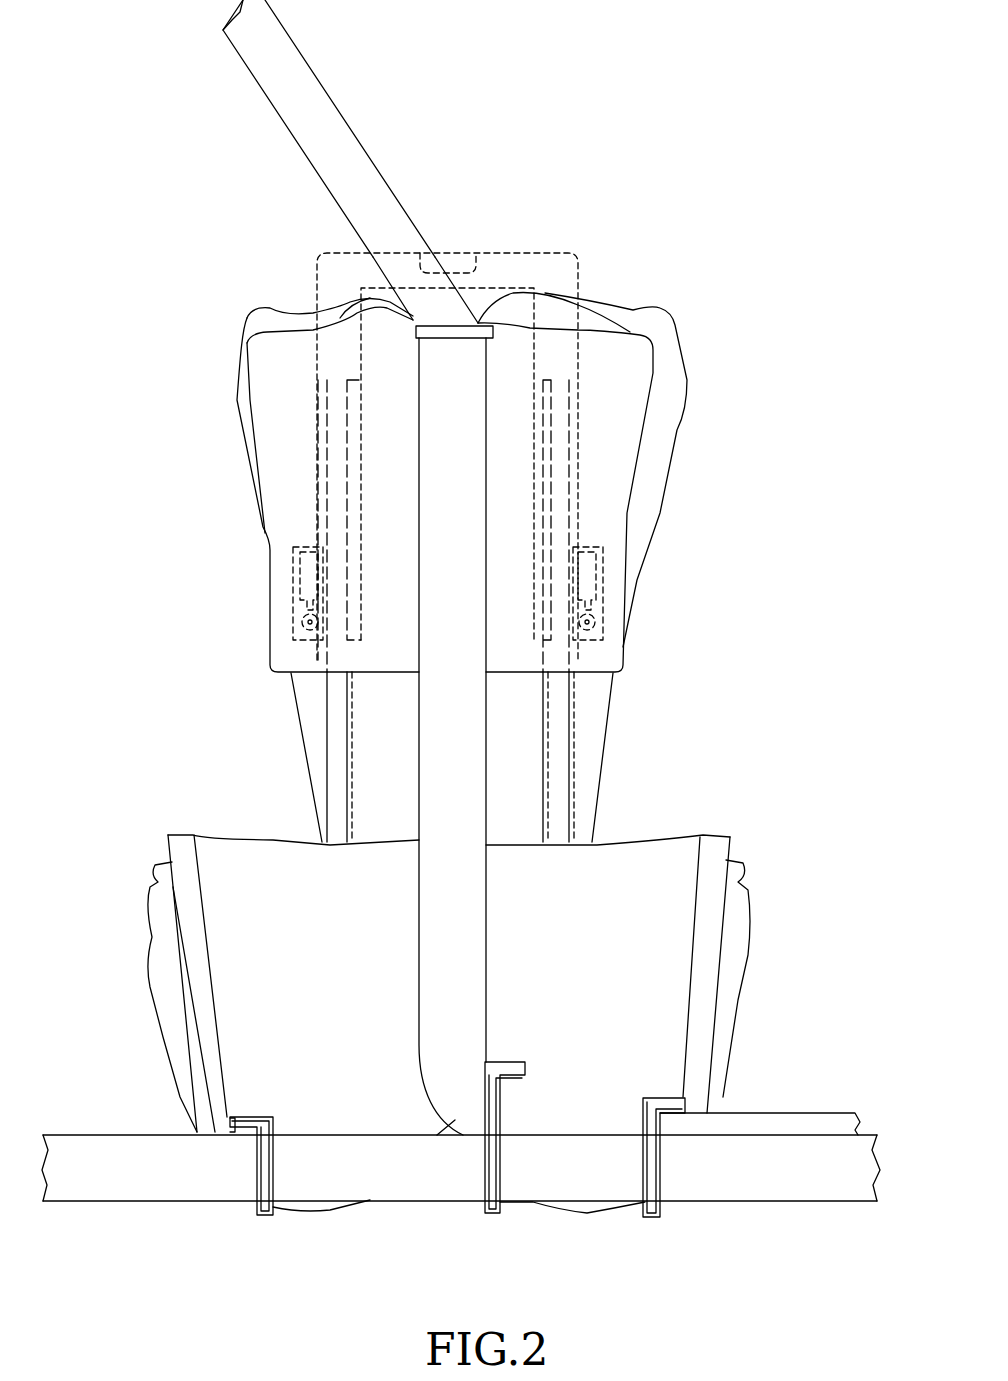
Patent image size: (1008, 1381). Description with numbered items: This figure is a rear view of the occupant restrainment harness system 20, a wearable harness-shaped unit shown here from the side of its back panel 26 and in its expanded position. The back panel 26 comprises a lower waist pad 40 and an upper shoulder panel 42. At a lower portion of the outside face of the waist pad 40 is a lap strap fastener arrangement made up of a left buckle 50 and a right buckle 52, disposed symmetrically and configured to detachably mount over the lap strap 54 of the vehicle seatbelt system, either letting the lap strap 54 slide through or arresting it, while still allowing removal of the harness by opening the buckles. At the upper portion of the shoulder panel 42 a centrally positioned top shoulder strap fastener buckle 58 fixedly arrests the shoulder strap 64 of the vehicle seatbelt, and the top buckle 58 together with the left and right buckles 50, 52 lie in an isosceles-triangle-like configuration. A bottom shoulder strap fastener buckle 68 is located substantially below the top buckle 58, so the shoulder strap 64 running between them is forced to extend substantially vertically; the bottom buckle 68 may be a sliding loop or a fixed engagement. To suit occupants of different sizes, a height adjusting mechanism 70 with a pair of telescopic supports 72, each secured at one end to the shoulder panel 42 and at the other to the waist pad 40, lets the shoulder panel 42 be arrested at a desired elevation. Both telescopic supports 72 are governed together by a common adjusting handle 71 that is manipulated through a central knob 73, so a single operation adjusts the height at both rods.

The occupant restrainment harness system 20 is at (203, 213).
The back panel 26 is at (692, 515).
The waist pad 40 is at (250, 948).
The shoulder panel 42 is at (275, 395).
The left buckle 50 is at (260, 1170).
The right buckle 52 is at (645, 1173).
The lap strap 54 is at (95, 1178).
The top shoulder strap fastener buckle 58 is at (460, 324).
The shoulder strap 64 is at (310, 107).
The bottom shoulder strap fastener buckle 68 is at (485, 1173).
The height adjusting mechanism 70 is at (583, 592).
The adjusting handle 71 is at (560, 255).
The telescopic supports 72 is at (337, 750).
The central knob 73 is at (450, 266).